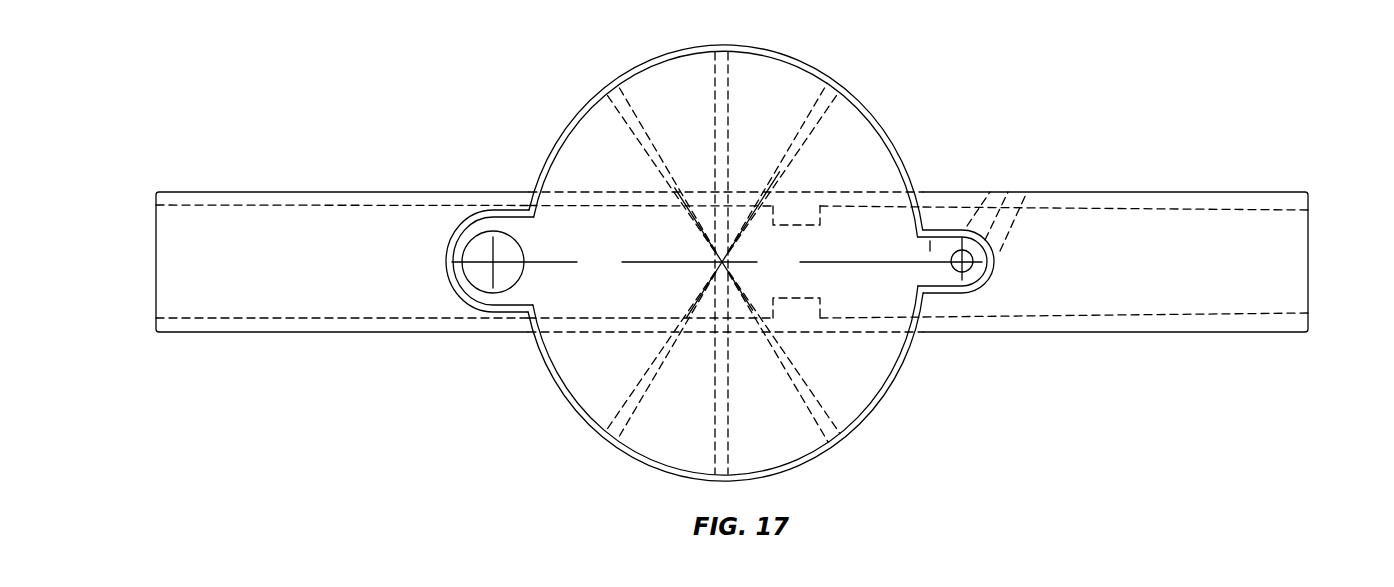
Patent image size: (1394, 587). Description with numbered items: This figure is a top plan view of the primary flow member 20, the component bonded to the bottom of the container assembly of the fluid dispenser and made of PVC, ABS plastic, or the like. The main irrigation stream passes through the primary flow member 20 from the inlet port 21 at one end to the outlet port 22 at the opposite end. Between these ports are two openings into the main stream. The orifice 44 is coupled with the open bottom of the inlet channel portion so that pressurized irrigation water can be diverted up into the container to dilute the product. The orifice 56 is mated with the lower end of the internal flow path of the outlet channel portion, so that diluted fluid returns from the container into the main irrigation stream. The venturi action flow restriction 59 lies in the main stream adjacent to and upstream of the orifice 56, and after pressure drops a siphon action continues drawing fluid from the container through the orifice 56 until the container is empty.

The primary flow member 20 is at (1243, 72).
The inlet port 21 is at (156, 252).
The outlet port 22 is at (1308, 252).
The orifice 44 is at (468, 252).
The orifice 56 is at (972, 268).
The venturi action flow restriction 59 is at (793, 241).